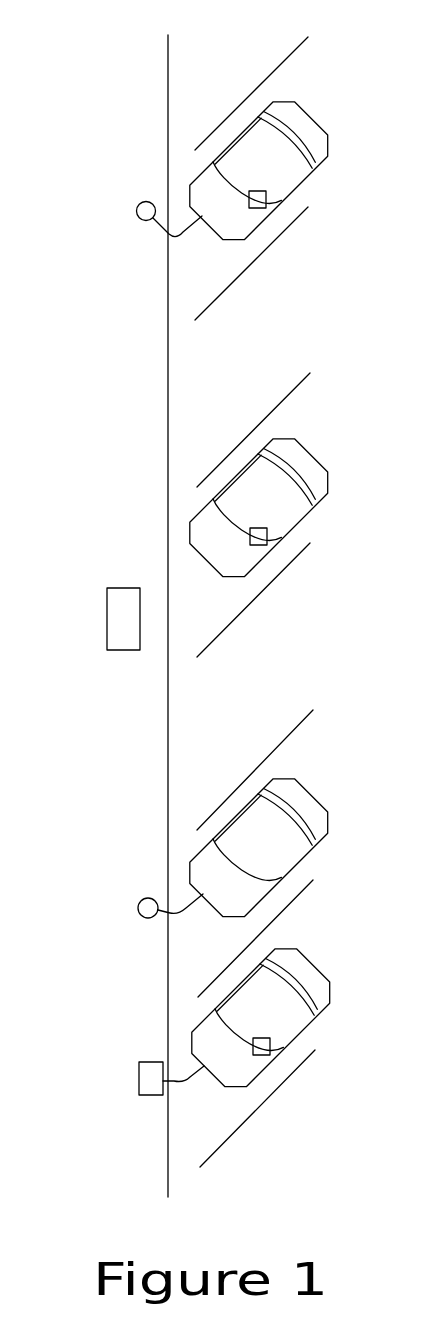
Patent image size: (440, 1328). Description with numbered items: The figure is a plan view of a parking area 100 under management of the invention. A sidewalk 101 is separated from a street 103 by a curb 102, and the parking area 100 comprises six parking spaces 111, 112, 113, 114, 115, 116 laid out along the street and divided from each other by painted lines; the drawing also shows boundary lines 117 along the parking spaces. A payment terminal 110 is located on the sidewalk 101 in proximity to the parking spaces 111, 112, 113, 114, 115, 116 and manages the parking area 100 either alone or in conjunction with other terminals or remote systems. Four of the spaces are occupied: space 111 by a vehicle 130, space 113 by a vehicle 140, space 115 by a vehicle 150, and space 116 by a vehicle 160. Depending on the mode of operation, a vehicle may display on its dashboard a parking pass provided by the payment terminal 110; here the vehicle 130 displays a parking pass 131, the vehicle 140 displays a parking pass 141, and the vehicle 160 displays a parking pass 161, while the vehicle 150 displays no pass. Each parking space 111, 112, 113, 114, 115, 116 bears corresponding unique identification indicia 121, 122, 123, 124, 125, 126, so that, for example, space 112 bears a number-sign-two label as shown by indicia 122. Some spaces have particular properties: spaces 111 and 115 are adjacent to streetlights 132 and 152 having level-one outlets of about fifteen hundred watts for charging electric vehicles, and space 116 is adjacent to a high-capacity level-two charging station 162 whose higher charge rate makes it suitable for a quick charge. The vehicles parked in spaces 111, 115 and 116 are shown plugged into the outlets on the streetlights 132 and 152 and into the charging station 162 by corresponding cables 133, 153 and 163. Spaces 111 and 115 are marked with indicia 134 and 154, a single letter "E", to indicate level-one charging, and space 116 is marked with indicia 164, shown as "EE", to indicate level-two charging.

The parking area 100 is at (103, 66).
The sidewalk 101 is at (68, 579).
The curb 102 is at (167, 560).
The street 103 is at (341, 325).
The payment terminal 110 is at (107, 630).
The parking space 111 is at (218, 293).
The parking space 112 is at (218, 460).
The parking space 113 is at (218, 630).
The parking space 114 is at (220, 800).
The parking space 115 is at (220, 968).
The parking space 116 is at (223, 1138).
The siding track 117 is at (297, 388).
The unique identification indicia 121 is at (157, 304).
The unique identification indicia 122 is at (153, 458).
The unique identification indicia 123 is at (160, 631).
The unique identification indicia 124 is at (153, 810).
The unique identification indicia 125 is at (153, 972).
The unique identification indicia 126 is at (153, 1142).
The vehicle 130 is at (308, 119).
The parking pass 131 is at (266, 208).
The streetlight 132 is at (139, 205).
The cable 133 is at (171, 240).
The indicia 134 is at (133, 297).
The vehicle 140 is at (308, 457).
The parking pass 141 is at (266, 544).
The vehicle 150 is at (309, 795).
The streetlight 152 is at (140, 904).
The cable 153 is at (170, 920).
The indicia 154 is at (133, 964).
The vehicle 160 is at (311, 970).
The parking pass 161 is at (270, 1054).
The high-capacity charging station 162 is at (139, 1080).
The cable 163 is at (170, 1092).
The indicia 164 is at (134, 1133).